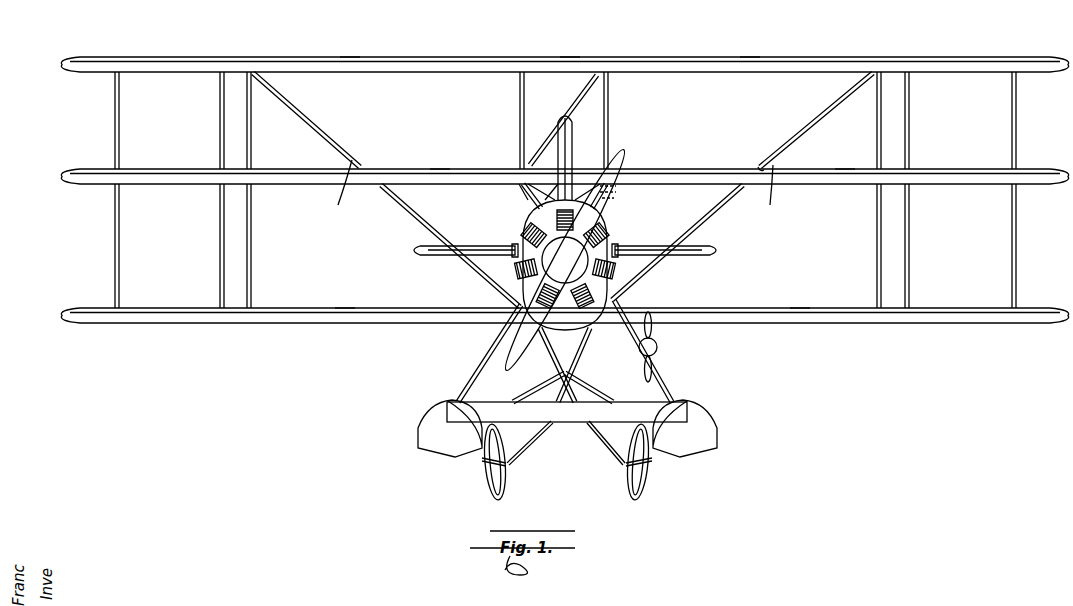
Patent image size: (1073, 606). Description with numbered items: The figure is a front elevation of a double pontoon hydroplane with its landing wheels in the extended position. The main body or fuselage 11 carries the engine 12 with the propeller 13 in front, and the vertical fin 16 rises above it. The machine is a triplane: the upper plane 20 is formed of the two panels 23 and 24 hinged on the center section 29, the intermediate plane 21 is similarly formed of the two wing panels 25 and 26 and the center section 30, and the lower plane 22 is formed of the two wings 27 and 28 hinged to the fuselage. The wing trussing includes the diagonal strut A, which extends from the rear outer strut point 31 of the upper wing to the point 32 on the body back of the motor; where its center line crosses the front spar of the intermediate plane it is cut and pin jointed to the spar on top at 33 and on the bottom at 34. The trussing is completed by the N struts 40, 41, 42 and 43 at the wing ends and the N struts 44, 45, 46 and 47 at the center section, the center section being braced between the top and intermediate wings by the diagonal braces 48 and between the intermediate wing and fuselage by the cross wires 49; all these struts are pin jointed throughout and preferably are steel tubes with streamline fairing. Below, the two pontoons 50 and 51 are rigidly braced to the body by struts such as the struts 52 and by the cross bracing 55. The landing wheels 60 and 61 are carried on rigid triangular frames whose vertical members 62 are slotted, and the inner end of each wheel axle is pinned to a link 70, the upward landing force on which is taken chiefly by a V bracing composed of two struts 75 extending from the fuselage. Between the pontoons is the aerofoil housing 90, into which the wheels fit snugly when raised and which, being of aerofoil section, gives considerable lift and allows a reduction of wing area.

The upper plane 20 is at (62, 64).
The intermediate plane 21 is at (62, 176).
The lower plane 22 is at (62, 314).
The panel 23 is at (348, 58).
The panel 24 is at (751, 58).
The wing panel 25 is at (440, 169).
The wing panel 26 is at (843, 177).
The wing 27 is at (341, 308).
The wing 28 is at (797, 309).
The center section 29 is at (570, 58).
The N strut 40 is at (881, 122).
The N strut 41 is at (881, 240).
The N strut 42 is at (251, 125).
The N strut 43 is at (251, 240).
The N strut 44 is at (608, 102).
The N strut 45 is at (520, 103).
The N strut 47 is at (510, 198).
The diagonal brace 48 is at (576, 101).
The vertical fin 16 is at (573, 130).
The cross wires 49 is at (555, 184).
The center section 30 is at (582, 170).
The rear outer strut point 31 is at (868, 80).
The pin joint 33 is at (757, 166).
The pin joint 34 is at (724, 188).
The point on the body 32 is at (617, 300).
The diagonal strut A is at (395, 200).
The main body or fuselage 11 is at (526, 268).
The engine 12 is at (613, 230).
The propeller 13 is at (620, 190).
The N strut 46 is at (612, 207).
The cross bracing 55 is at (565, 372).
The strut 75 is at (548, 368).
The strut 52 is at (482, 357).
The aerofoil housing 90 is at (567, 412).
The pontoon 50 is at (450, 428).
The pontoon 51 is at (685, 428).
The link 70 is at (532, 442).
The vertical member 62 is at (478, 462).
The landing wheel 60 is at (489, 493).
The landing wheel 61 is at (640, 491).